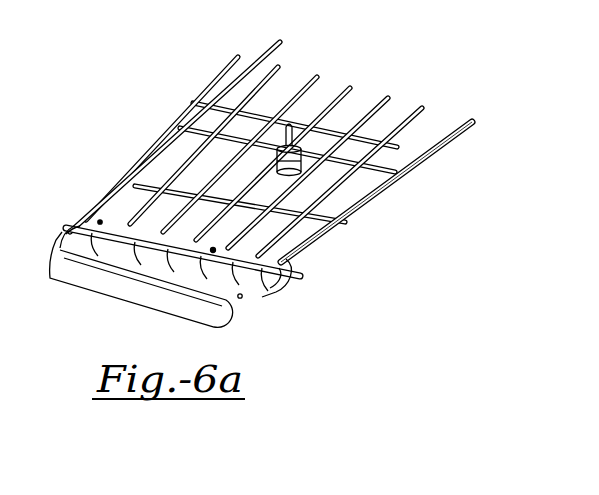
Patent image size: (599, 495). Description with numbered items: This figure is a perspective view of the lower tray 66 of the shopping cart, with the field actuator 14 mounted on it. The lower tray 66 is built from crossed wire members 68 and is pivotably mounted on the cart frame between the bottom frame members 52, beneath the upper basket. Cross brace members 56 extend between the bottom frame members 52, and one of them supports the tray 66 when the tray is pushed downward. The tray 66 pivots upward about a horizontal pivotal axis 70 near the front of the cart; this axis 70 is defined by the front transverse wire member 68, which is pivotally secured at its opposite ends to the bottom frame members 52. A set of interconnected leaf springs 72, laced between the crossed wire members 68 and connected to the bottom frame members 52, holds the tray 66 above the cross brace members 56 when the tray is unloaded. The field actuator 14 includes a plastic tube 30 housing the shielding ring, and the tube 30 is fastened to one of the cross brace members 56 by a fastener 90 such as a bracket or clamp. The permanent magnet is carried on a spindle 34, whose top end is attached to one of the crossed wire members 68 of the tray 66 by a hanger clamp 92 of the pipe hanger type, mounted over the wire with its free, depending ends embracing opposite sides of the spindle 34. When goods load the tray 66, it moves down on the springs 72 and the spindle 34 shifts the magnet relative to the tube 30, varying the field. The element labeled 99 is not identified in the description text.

The field actuator 14 is at (318, 141).
The plastic tube 30 is at (216, 247).
The spindle 34 is at (272, 120).
The bottom frame members 52 is at (268, 44).
The cross brace members 56 is at (368, 200).
The lower tray 66 is at (176, 108).
The crossed wire members 68 is at (228, 112).
The horizontal pivotal axis 70 is at (241, 300).
The leaf springs 72 is at (100, 221).
The fastener 90 is at (350, 219).
The hanger clamp 92 is at (262, 190).
The support rail 99 is at (317, 227).